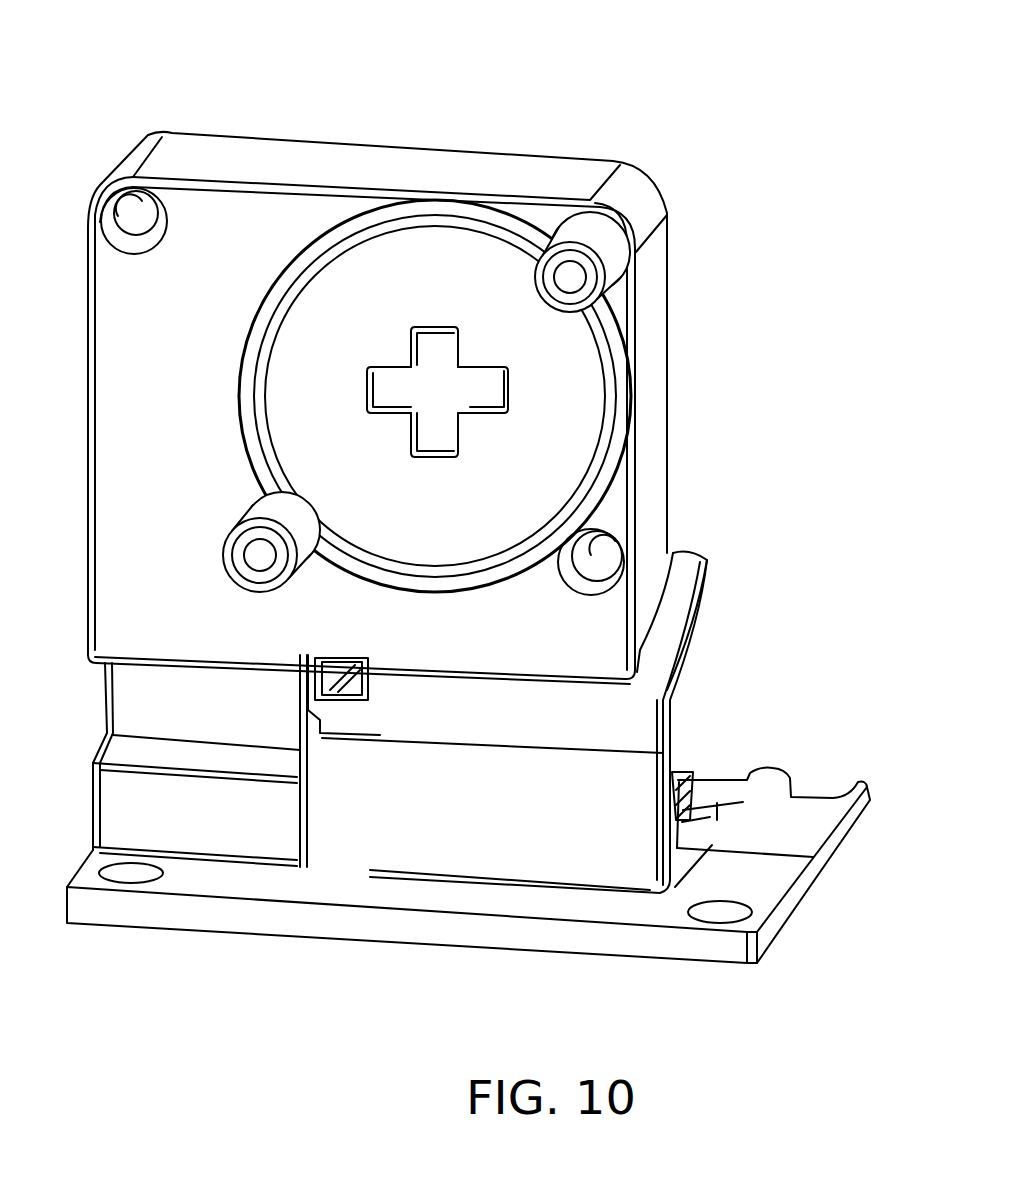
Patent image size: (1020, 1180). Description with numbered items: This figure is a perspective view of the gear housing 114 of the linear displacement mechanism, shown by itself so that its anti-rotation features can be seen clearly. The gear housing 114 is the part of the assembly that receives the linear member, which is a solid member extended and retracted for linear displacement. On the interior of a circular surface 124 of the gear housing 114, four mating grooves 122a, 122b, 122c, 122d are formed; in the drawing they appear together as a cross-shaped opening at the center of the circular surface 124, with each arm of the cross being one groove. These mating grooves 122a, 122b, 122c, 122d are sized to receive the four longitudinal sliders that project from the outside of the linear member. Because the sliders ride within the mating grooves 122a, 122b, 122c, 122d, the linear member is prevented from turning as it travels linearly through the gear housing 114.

The gear housing 114 is at (410, 82).
The mating groove 122a is at (500, 407).
The mating groove 122b is at (440, 458).
The mating groove 122c is at (362, 393).
The mating groove 122d is at (420, 325).
The circular surface 124 is at (568, 458).